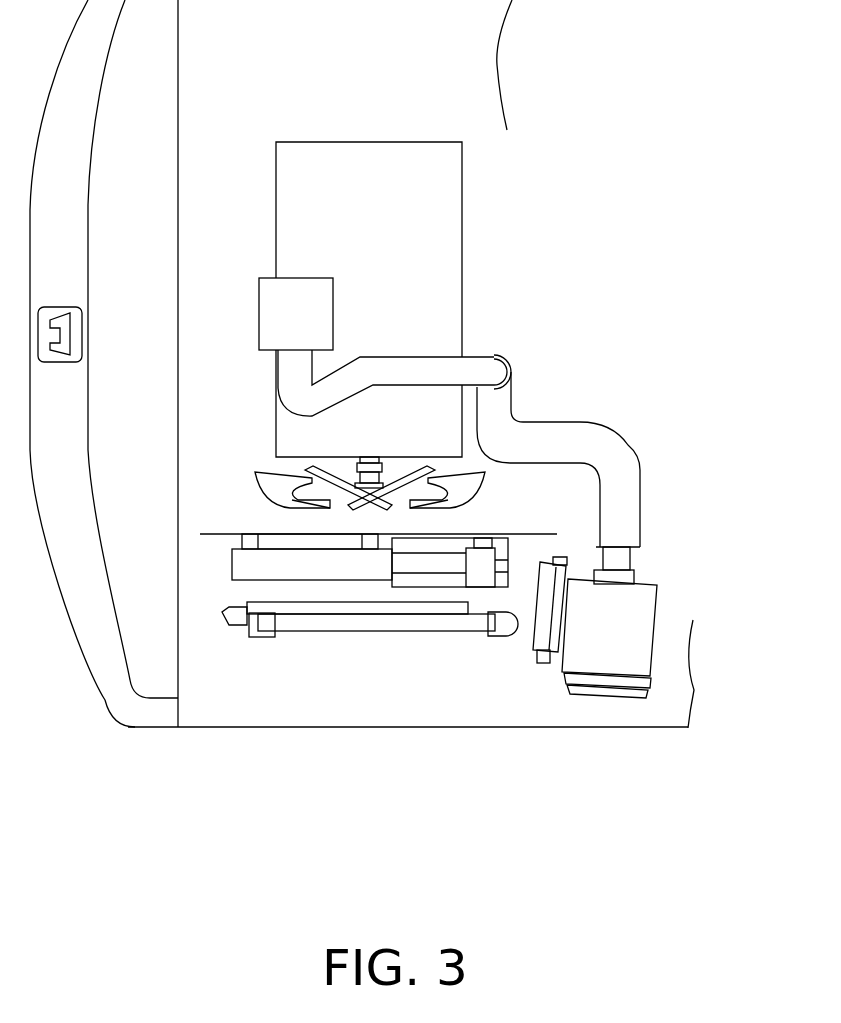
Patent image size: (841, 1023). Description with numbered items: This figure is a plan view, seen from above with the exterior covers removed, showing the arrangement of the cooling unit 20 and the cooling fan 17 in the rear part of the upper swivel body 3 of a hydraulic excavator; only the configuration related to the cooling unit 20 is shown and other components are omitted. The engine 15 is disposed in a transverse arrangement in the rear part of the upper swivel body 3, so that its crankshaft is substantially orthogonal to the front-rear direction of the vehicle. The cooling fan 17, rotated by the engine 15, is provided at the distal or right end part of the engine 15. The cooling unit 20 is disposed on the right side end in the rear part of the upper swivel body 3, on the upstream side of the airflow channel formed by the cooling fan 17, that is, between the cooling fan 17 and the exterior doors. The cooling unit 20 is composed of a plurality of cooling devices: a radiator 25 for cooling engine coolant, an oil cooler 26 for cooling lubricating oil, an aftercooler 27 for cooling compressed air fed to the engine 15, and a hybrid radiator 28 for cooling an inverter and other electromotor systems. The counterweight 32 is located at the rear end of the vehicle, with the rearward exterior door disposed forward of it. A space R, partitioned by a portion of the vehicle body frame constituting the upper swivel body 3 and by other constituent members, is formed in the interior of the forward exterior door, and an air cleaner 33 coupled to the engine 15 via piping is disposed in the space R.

The upper swivel body 3 is at (230, 705).
The engine 15 is at (440, 255).
The cooling fan 17 is at (255, 490).
The cooling unit 20 is at (221, 587).
The radiator 25 is at (333, 568).
The oil cooler 26 is at (482, 572).
The aftercooler 27 is at (422, 620).
The hybrid radiator 28 is at (240, 625).
The counterweight 32 is at (138, 718).
The air cleaner 33 is at (620, 695).
The space R is at (655, 535).